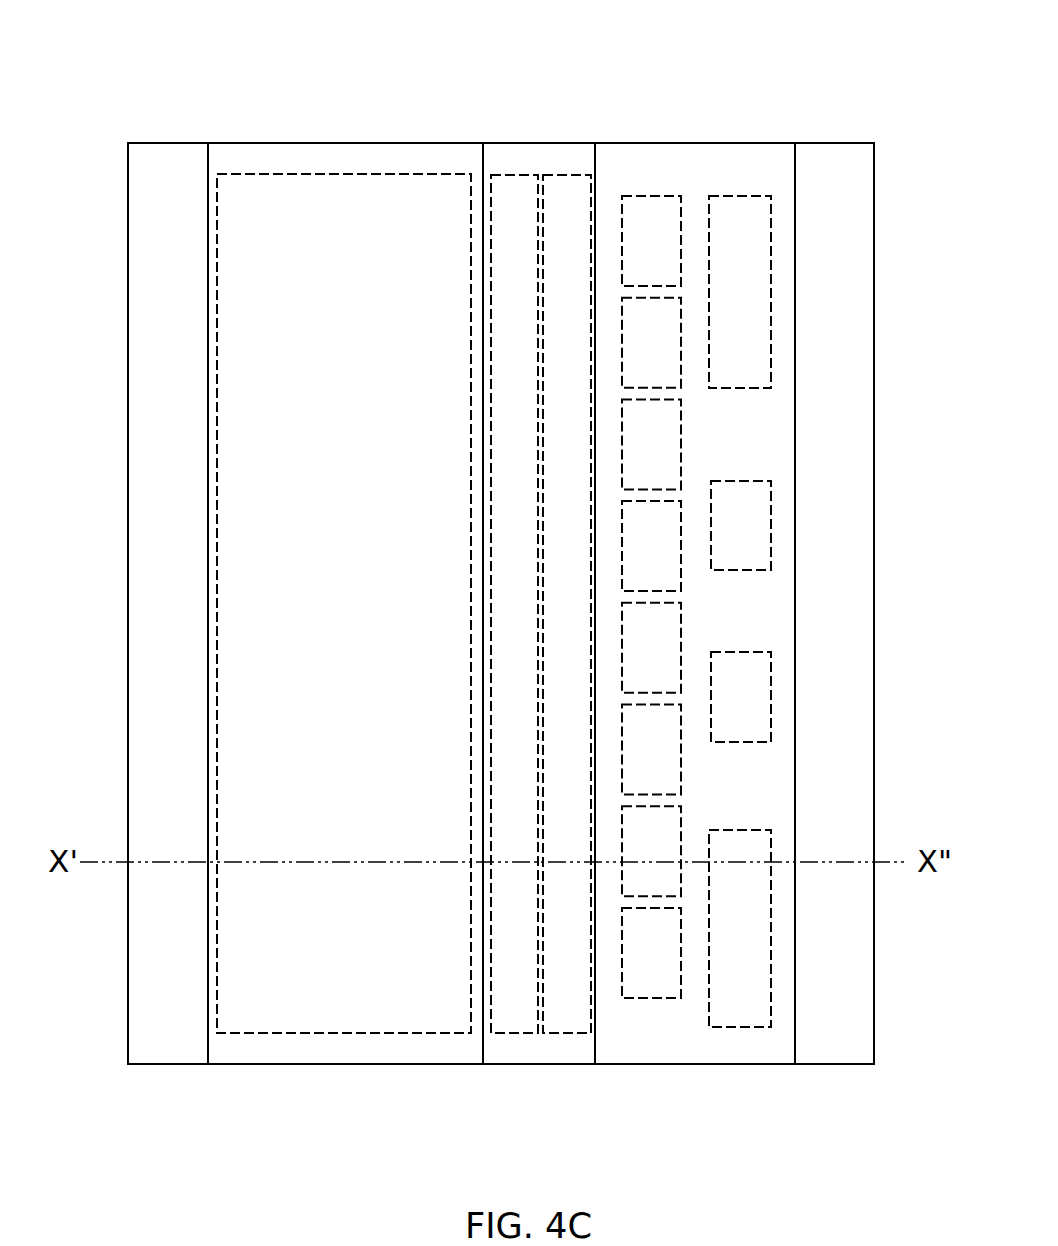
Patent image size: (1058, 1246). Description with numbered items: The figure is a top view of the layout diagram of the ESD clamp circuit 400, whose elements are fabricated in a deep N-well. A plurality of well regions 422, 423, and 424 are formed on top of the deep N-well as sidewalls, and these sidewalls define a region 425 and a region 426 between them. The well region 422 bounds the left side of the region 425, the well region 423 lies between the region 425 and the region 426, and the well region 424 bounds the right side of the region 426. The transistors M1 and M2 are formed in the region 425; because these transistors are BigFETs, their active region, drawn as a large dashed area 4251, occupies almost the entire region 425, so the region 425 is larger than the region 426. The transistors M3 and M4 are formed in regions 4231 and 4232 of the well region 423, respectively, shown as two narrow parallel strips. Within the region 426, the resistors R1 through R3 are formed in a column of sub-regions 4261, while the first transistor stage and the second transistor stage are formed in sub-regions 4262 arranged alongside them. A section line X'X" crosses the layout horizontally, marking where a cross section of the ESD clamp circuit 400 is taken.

The ESD clamp circuit 400 is at (108, 38).
The well region 422 is at (162, 165).
The well region 423 is at (535, 162).
The region 4231 is at (503, 177).
The region 4232 is at (563, 190).
The well region 424 is at (827, 177).
The region 425 is at (350, 160).
The doped region 4251 is at (298, 200).
The region 426 is at (698, 177).
The sub-regions 4261 is at (650, 207).
The sub-regions 4262 is at (737, 203).